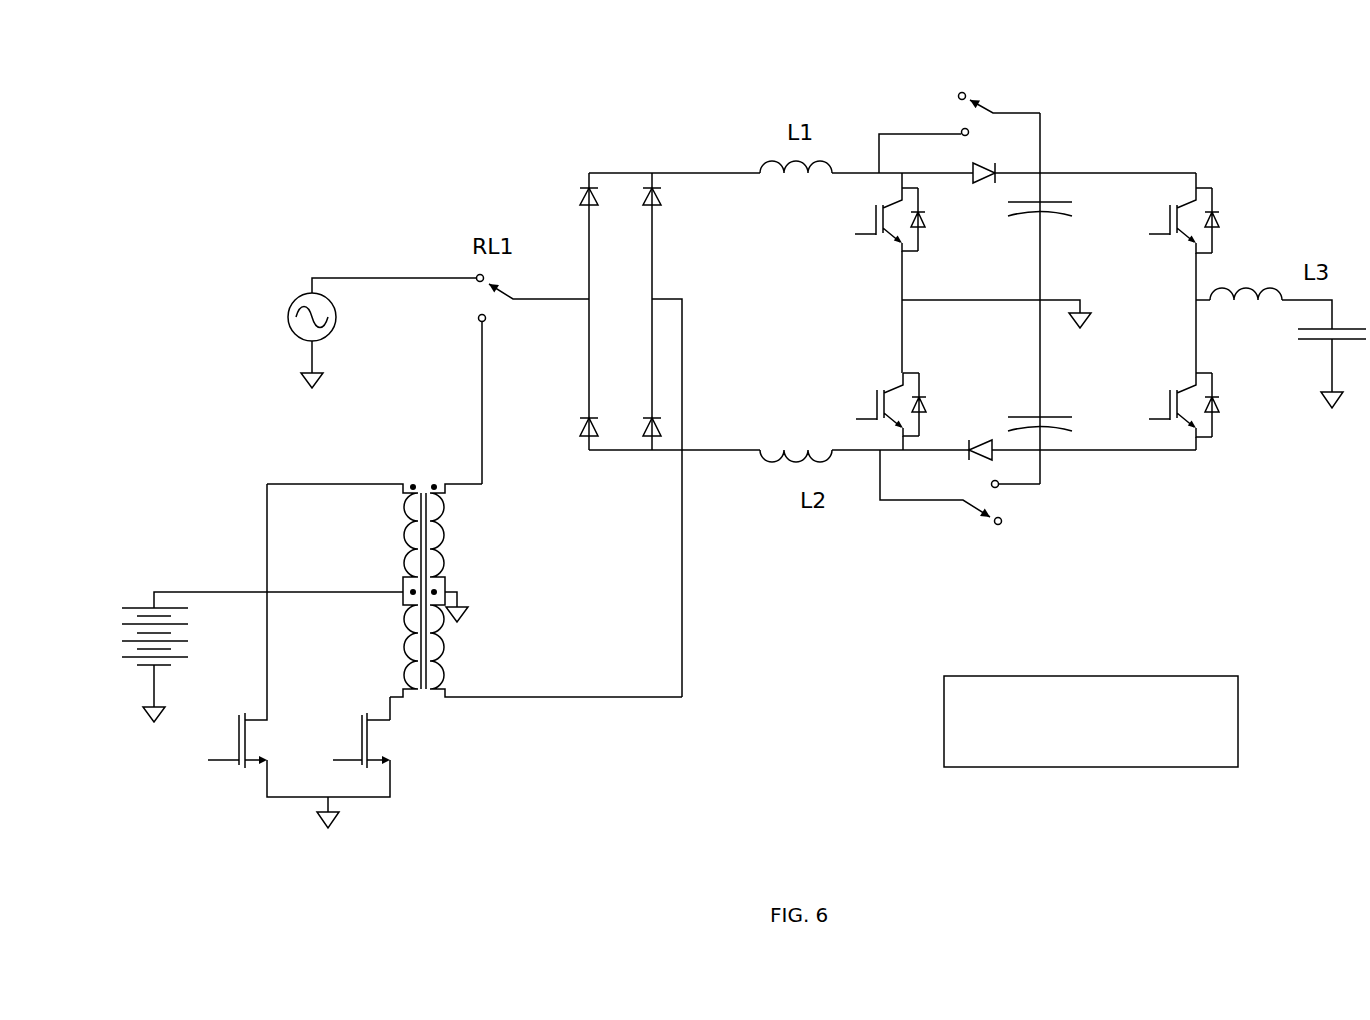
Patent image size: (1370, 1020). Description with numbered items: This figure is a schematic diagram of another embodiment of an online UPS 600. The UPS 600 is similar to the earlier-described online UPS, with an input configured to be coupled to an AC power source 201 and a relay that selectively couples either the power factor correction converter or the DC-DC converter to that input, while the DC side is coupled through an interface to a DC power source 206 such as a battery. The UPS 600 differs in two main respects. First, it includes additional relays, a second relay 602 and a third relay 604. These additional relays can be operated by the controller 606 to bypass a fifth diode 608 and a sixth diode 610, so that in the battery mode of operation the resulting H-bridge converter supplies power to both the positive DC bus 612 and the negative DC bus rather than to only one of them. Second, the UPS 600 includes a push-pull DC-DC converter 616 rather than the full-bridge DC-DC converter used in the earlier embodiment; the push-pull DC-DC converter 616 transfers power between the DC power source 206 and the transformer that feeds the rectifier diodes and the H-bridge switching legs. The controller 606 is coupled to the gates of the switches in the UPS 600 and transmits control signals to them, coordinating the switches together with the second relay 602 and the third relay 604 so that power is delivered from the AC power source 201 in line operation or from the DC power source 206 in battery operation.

The online UPS 600 is at (212, 102).
The AC power source 201 is at (302, 296).
The DC power source 206 is at (149, 606).
The relay RL2 602 is at (933, 70).
The relay RL3 604 is at (958, 543).
The controller 606 is at (1192, 686).
The diode D5 608 is at (977, 182).
The diode D6 610 is at (985, 440).
The positive DC bus 612 is at (1118, 172).
The push-pull DC-DC converter 616 is at (568, 771).